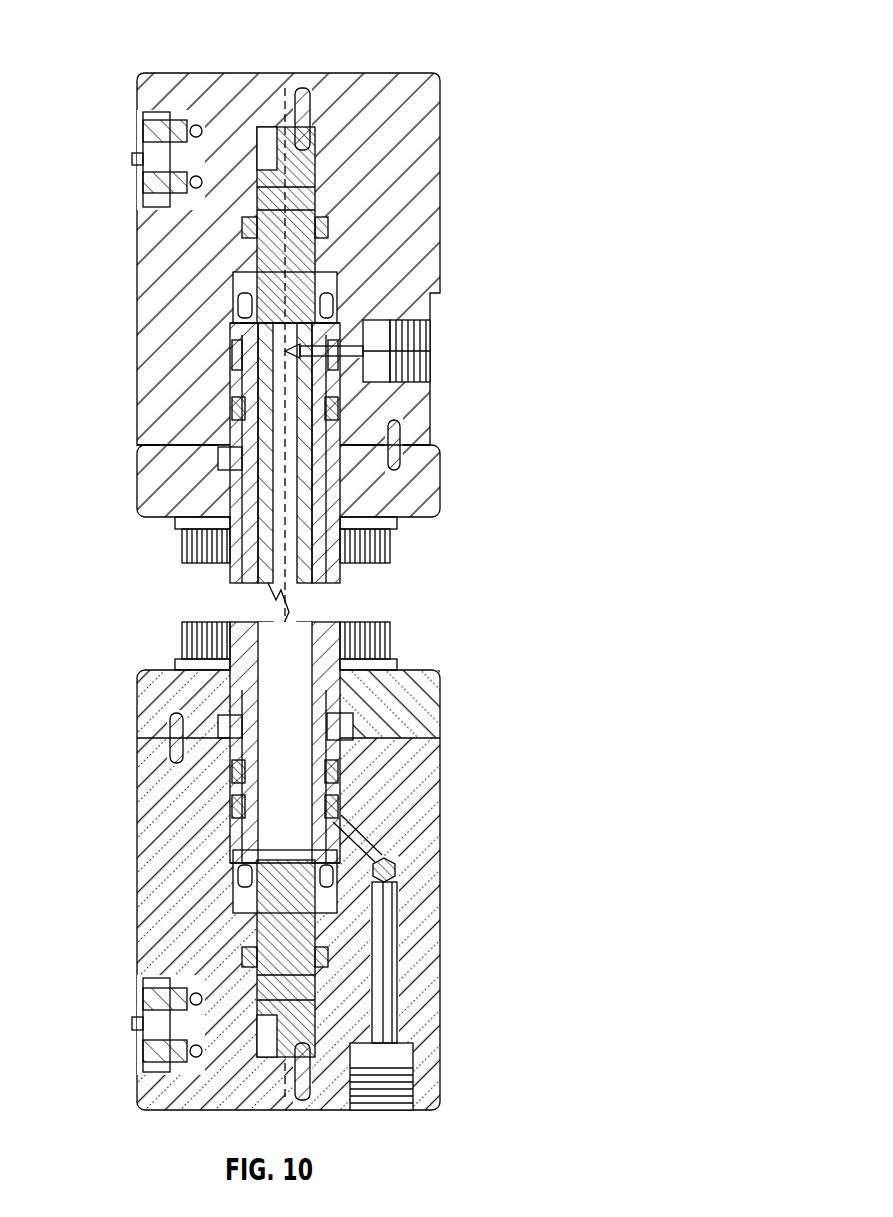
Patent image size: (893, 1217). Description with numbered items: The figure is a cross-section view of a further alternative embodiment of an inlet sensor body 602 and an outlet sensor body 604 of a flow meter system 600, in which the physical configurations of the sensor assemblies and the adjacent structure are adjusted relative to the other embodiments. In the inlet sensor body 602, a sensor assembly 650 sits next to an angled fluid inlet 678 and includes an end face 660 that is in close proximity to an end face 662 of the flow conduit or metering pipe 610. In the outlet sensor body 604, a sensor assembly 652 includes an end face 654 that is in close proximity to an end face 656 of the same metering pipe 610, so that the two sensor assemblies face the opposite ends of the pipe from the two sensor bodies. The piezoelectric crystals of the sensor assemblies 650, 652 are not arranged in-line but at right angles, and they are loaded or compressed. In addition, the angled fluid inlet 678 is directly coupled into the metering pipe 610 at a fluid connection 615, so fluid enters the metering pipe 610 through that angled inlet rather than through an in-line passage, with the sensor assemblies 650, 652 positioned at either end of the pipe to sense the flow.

The flow meter system 600 is at (515, 32).
The inlet sensor body 602 is at (110, 1086).
The outlet sensor body 604 is at (120, 151).
The metering pipe 610 is at (327, 690).
The fluid connection 615 is at (337, 827).
The sensor assembly 650 is at (315, 927).
The sensor assembly 652 is at (313, 255).
The end face 654 is at (237, 312).
The end face 656 is at (337, 313).
The end face 660 is at (235, 868).
The end face 662 is at (290, 868).
The angled fluid inlet 678 is at (398, 878).